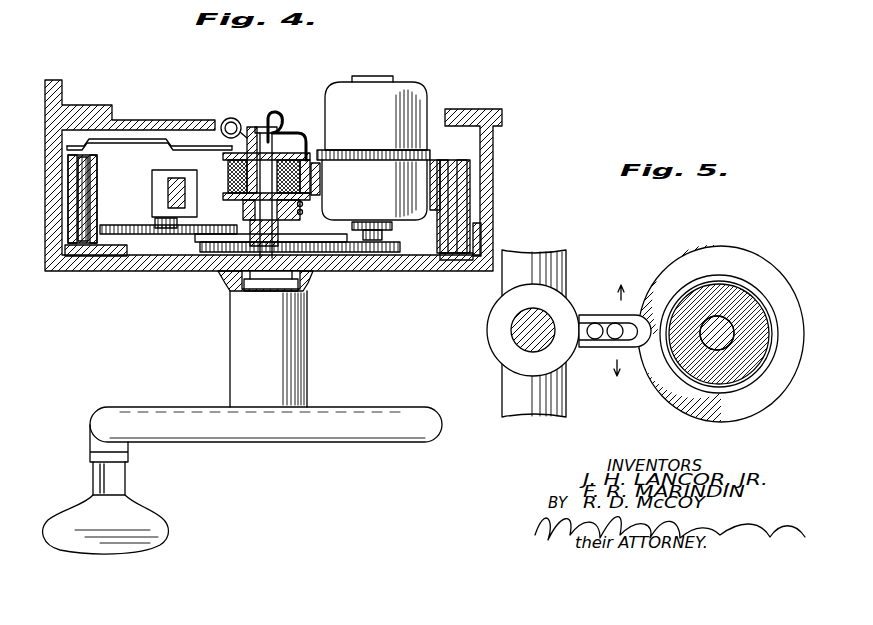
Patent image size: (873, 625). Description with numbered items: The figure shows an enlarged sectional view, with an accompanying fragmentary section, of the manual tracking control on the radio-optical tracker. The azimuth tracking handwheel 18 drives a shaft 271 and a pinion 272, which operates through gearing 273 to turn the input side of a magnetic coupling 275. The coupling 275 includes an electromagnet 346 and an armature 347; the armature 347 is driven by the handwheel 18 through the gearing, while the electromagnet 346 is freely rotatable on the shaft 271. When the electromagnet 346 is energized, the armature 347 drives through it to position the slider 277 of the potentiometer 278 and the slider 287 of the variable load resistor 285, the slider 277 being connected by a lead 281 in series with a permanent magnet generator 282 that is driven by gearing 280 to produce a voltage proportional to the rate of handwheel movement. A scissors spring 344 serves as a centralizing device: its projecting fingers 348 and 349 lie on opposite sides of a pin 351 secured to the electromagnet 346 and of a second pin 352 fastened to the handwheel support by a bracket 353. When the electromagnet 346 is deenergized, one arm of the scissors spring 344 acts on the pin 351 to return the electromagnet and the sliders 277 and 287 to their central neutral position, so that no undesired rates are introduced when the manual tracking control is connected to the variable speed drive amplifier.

In FIG. 4, the azimuth tracking handwheel 18 is at (347, 432).
In FIG. 4, the shaft 271 is at (258, 287).
In FIG. 5, the shaft 271 is at (720, 322).
In FIG. 4, the pinion 272 is at (320, 272).
In FIG. 4, the gearing 273 is at (128, 258).
In FIG. 4, the magnetic coupling 275 is at (317, 146).
In FIG. 4, the potentiometer slider 277 is at (122, 140).
In FIG. 4, the potentiometer 278 is at (76, 224).
In FIG. 4, the gearing 280 is at (350, 256).
In FIG. 4, the lead 281 is at (233, 118).
In FIG. 4, the permanent magnet generator 282 is at (420, 95).
In FIG. 4, the variable resistor 285 is at (90, 192).
In FIG. 4, the slider 287 is at (145, 147).
In FIG. 4, the scissors spring 344 is at (303, 206).
In FIG. 5, the scissors spring 344 is at (700, 273).
In FIG. 4, the electromagnet 346 is at (266, 118).
In FIG. 4, the armature 347 is at (316, 190).
In FIG. 4, the projecting finger 348 is at (220, 245).
In FIG. 5, the projecting finger 348 is at (588, 314).
In FIG. 4, the projecting finger 349 is at (212, 238).
In FIG. 5, the projecting finger 349 is at (605, 342).
In FIG. 5, the pin 351 is at (633, 300).
In FIG. 4, the second pin 352 is at (165, 236).
In FIG. 5, the second pin 352 is at (590, 342).
In FIG. 4, the bracket 353 is at (152, 180).
In FIG. 5, the bracket 353 is at (560, 412).